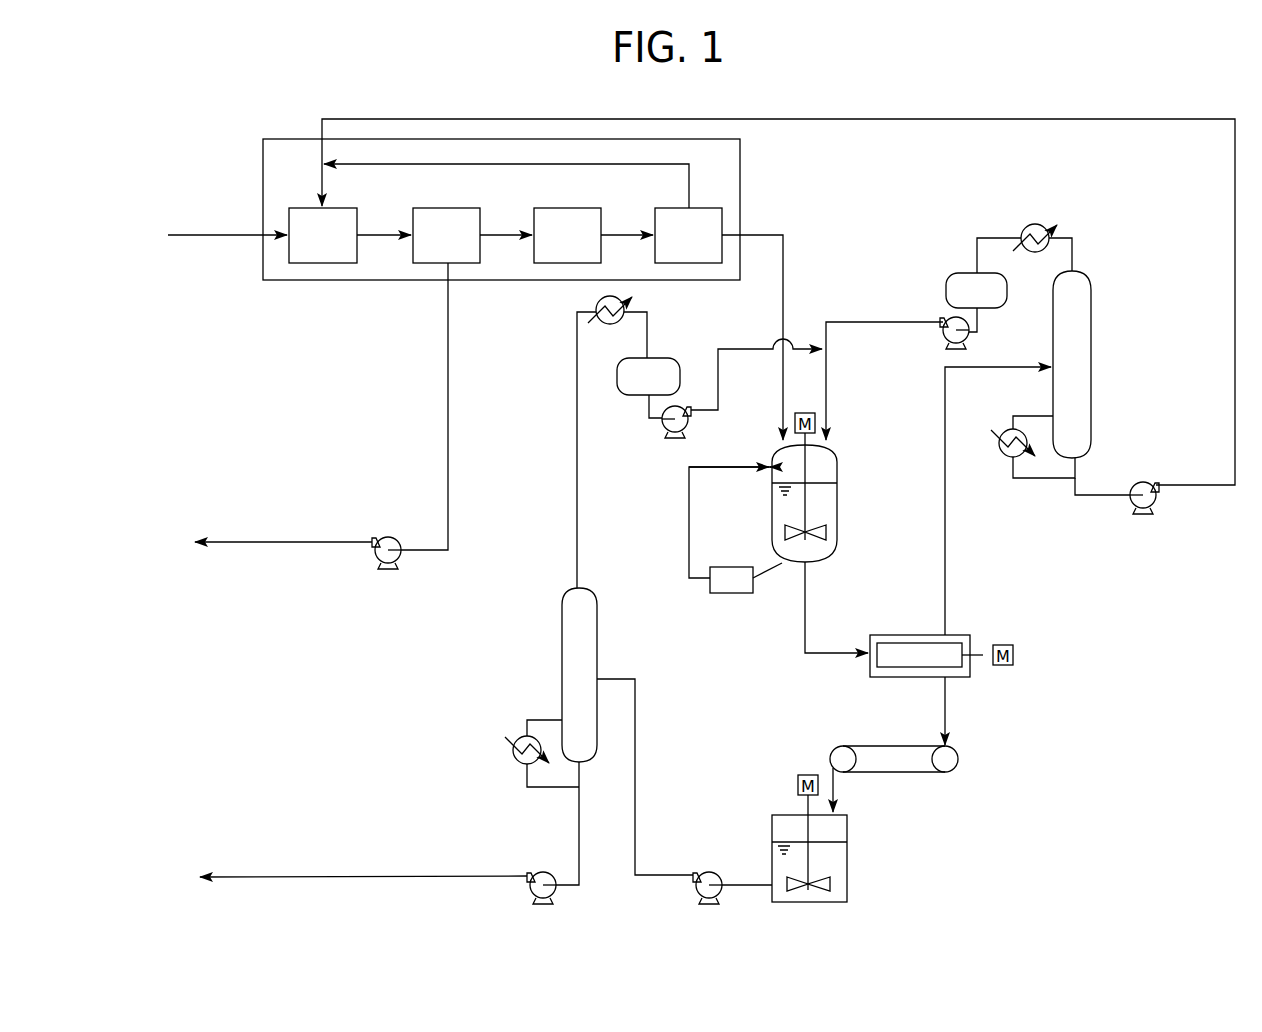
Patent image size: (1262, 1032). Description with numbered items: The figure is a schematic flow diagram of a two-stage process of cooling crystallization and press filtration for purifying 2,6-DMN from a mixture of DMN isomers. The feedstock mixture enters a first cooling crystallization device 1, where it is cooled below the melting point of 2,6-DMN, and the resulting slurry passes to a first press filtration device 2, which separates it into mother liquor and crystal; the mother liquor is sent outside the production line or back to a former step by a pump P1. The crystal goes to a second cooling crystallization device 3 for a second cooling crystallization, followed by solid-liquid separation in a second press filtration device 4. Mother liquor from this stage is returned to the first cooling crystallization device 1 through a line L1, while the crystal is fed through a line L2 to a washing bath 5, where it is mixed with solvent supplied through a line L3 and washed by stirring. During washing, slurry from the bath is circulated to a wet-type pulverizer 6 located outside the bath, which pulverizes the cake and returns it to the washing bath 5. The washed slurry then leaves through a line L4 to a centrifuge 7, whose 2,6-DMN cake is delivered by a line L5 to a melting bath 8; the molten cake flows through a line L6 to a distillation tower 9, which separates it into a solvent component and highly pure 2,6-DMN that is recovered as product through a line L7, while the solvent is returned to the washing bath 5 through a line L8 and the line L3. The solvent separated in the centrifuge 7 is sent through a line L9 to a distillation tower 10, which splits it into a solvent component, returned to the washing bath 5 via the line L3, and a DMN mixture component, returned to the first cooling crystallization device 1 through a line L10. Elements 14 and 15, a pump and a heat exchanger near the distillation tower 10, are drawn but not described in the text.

The first cooling crystallization device 1 is at (325, 263).
The first press filtration device 2 is at (432, 263).
The second cooling crystallization device 3 is at (556, 263).
The second press filtration device 4 is at (692, 263).
The washing bath 5 is at (827, 468).
The wet-type pulverizer 6 is at (723, 587).
The centrifuge 7 is at (975, 626).
The melting bath 8 is at (837, 866).
The distillation tower 9 is at (583, 617).
The distillation tower 10 is at (1086, 362).
The pump 14 is at (1160, 500).
The heater 15 is at (1003, 460).
The pump P1 is at (321, 430).
The line L1 is at (689, 178).
The line L2 is at (783, 262).
The line L3 is at (826, 360).
The line L4 is at (805, 630).
The line L5 is at (948, 700).
The line L6 is at (635, 805).
The line L7 is at (579, 823).
The line L8 is at (577, 482).
The line L9 is at (945, 555).
The line L10 is at (1235, 306).